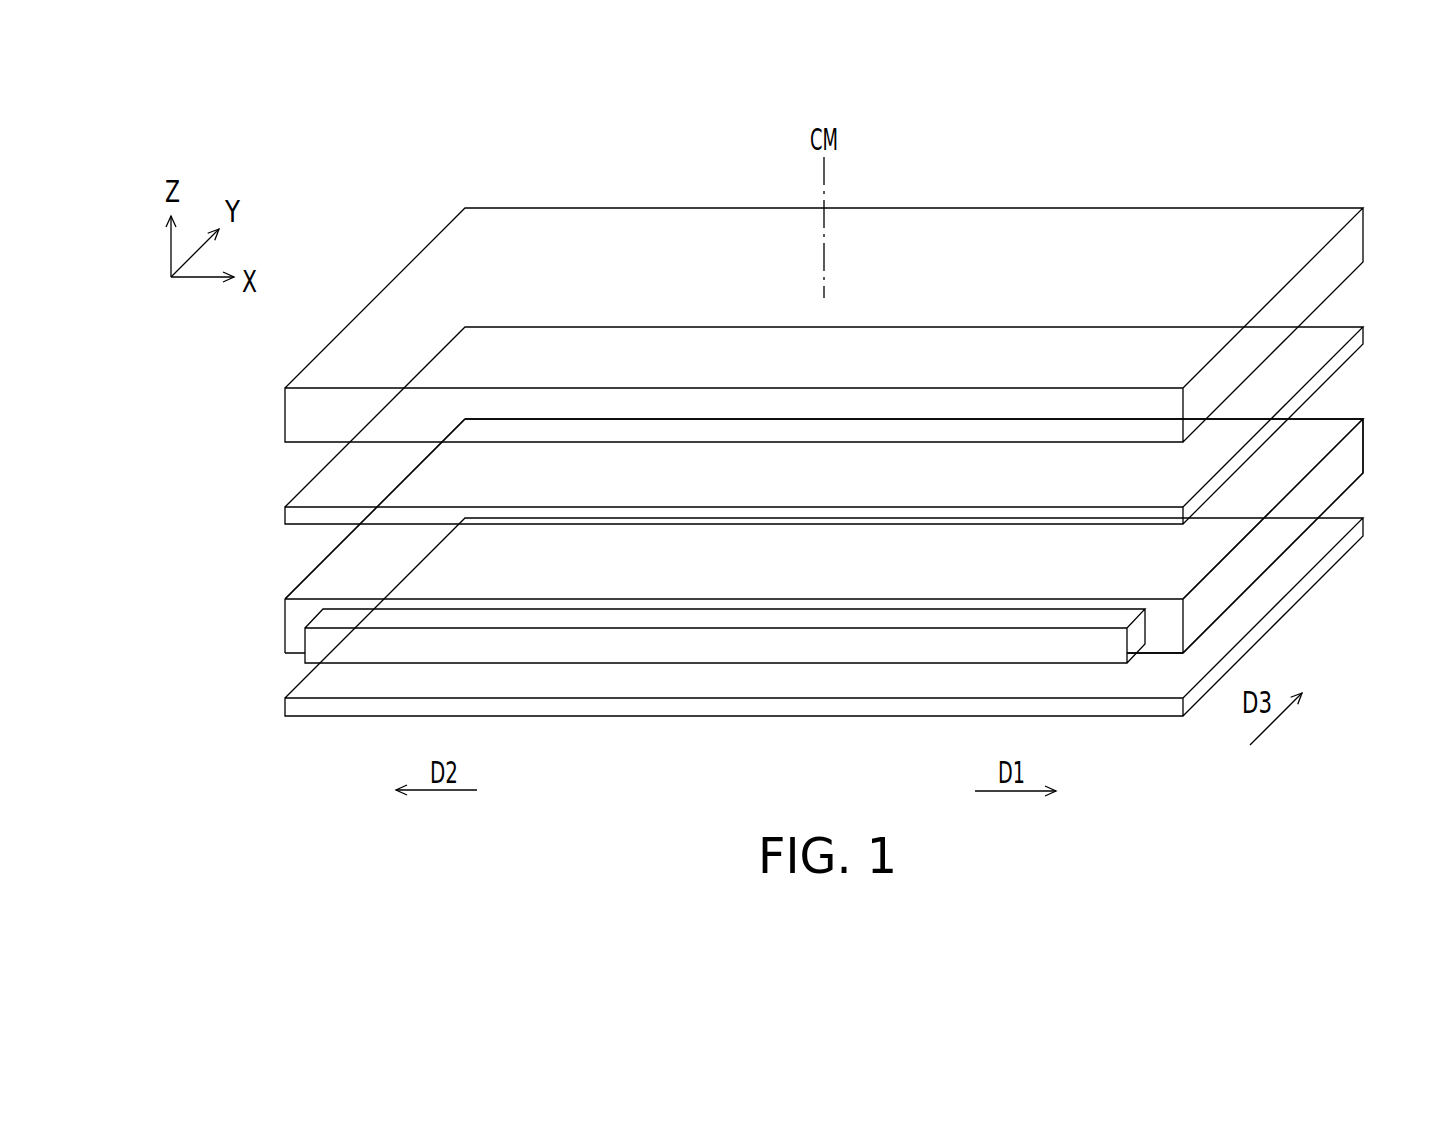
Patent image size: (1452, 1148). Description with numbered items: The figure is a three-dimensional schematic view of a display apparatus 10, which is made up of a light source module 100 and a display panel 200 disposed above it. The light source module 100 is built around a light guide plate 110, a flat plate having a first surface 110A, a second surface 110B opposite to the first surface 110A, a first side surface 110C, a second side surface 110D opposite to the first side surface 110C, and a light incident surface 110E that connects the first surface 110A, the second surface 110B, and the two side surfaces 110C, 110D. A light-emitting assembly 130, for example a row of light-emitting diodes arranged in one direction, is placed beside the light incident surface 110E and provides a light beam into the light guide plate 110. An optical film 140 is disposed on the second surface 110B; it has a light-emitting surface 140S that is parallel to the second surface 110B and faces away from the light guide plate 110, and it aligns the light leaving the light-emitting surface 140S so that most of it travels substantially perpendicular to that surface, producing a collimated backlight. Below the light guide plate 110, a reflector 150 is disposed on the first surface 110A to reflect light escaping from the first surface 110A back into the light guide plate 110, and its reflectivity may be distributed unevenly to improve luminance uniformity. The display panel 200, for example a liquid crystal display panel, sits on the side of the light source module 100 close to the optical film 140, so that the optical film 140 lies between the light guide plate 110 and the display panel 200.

The display apparatus 10 is at (1425, 780).
The light source module 100 is at (189, 503).
The light guide plate 110 is at (1355, 452).
The first surface 110A is at (1157, 654).
The second surface 110B is at (1143, 563).
The first side surface 110C is at (312, 571).
The second side surface 110D is at (1264, 543).
The light incident surface 110E is at (304, 616).
The light-emitting assembly 130 is at (793, 644).
The optical film 140 is at (867, 403).
The light-emitting surface 140S is at (1317, 347).
The reflector 150 is at (1357, 530).
The display panel 200 is at (1357, 231).